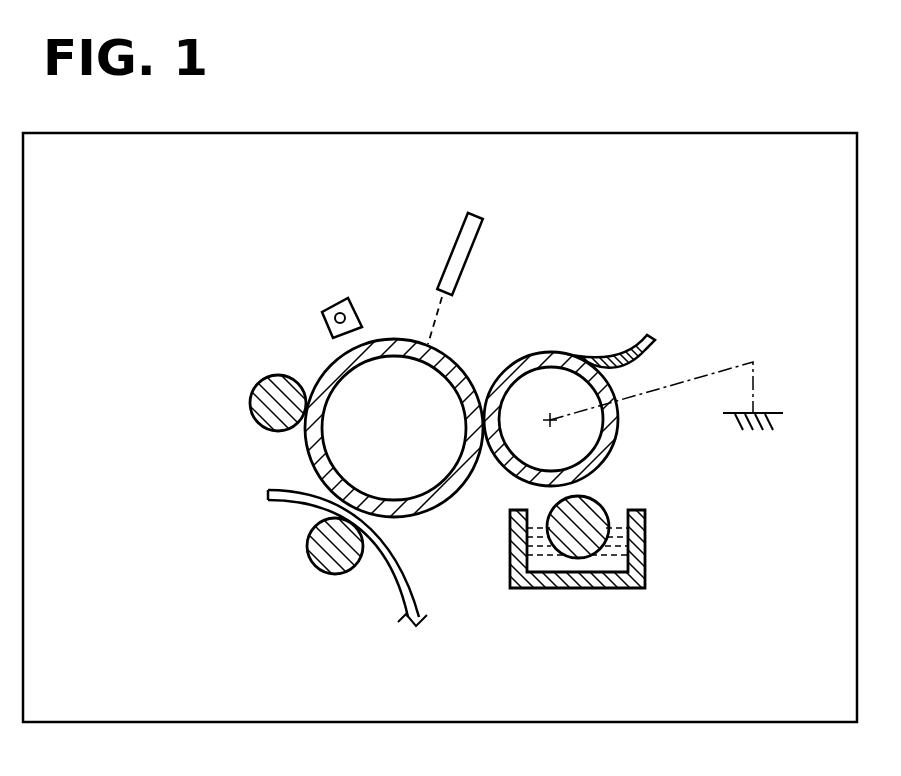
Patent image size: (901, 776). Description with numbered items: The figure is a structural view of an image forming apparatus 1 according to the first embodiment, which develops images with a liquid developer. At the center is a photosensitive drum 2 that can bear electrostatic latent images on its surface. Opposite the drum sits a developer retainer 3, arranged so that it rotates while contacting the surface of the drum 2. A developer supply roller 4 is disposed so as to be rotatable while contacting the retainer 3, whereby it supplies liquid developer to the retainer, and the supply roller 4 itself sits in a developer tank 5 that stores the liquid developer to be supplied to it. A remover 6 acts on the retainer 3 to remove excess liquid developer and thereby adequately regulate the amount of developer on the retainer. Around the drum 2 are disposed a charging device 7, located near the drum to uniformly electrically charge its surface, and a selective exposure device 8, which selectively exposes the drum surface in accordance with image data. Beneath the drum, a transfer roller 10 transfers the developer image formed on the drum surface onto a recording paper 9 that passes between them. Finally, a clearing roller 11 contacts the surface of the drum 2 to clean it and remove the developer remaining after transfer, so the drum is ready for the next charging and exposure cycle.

The image forming apparatus 1 is at (257, 446).
The photosensitive drum 2 is at (325, 372).
The developer retainer 3 is at (532, 362).
The developer supply roller 4 is at (597, 500).
The developer tank 5 is at (637, 555).
The remover 6 is at (628, 362).
The charging device 7 is at (348, 298).
The selective exposure device 8 is at (468, 238).
The recording paper 9 is at (410, 582).
The transfer roller 10 is at (313, 530).
The clearing roller 11 is at (250, 400).